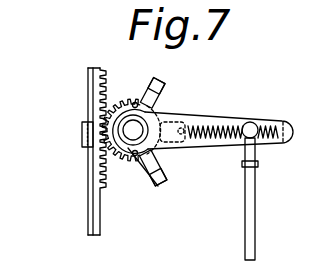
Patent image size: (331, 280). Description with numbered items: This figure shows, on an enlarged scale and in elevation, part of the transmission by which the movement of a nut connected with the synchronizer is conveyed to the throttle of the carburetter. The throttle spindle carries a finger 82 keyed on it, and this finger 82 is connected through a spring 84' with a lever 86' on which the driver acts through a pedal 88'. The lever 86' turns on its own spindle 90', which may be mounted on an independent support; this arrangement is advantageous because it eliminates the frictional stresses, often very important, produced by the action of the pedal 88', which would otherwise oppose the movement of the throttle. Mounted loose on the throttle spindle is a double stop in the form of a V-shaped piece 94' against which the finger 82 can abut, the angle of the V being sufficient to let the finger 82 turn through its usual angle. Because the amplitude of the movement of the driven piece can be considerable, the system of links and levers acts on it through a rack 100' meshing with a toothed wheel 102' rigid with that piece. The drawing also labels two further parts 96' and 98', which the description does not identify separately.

The finger 82 is at (182, 116).
The spring 84' is at (233, 112).
The lever 86' is at (287, 116).
The pedal 88' is at (265, 191).
The spindle of the lever 90' is at (163, 167).
The V-shaped piece 94' is at (139, 78).
The upper stop block 96' is at (164, 86).
The lower stop cap 98' is at (166, 189).
The rack 100' is at (64, 151).
The toothed wheel 102' is at (131, 157).